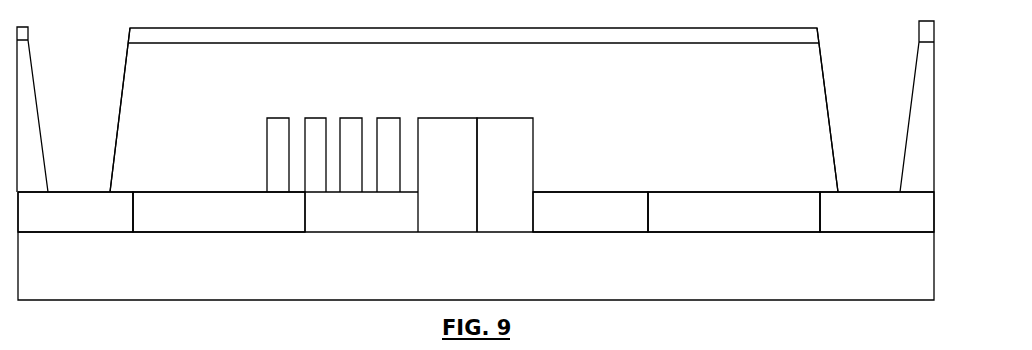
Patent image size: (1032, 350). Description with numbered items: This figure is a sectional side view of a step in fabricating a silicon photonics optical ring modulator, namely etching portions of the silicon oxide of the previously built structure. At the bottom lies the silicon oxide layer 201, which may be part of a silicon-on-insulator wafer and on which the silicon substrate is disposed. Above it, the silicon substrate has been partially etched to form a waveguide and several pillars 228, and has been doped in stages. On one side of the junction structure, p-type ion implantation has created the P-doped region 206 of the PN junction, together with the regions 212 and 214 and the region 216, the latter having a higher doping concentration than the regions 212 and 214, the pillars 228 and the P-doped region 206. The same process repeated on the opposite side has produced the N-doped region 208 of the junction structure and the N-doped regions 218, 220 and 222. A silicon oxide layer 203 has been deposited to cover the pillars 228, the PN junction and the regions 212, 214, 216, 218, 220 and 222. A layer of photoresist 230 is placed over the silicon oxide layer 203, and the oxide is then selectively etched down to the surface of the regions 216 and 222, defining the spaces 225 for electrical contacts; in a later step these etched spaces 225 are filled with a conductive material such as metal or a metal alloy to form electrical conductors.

The silicon oxide layer 201 is at (355, 300).
The silicon oxide layer 203 is at (623, 63).
The P-doped region 206 is at (445, 118).
The N-doped region 208 is at (495, 118).
The region 212 is at (392, 235).
The region 214 is at (200, 192).
The region 216 is at (123, 192).
The N-doped region 218 is at (567, 192).
The N-doped region 220 is at (660, 192).
The N-doped region 222 is at (827, 192).
The spaces 225 is at (123, 87).
The pillars 228 is at (318, 118).
The photoresist 230 is at (28, 33).